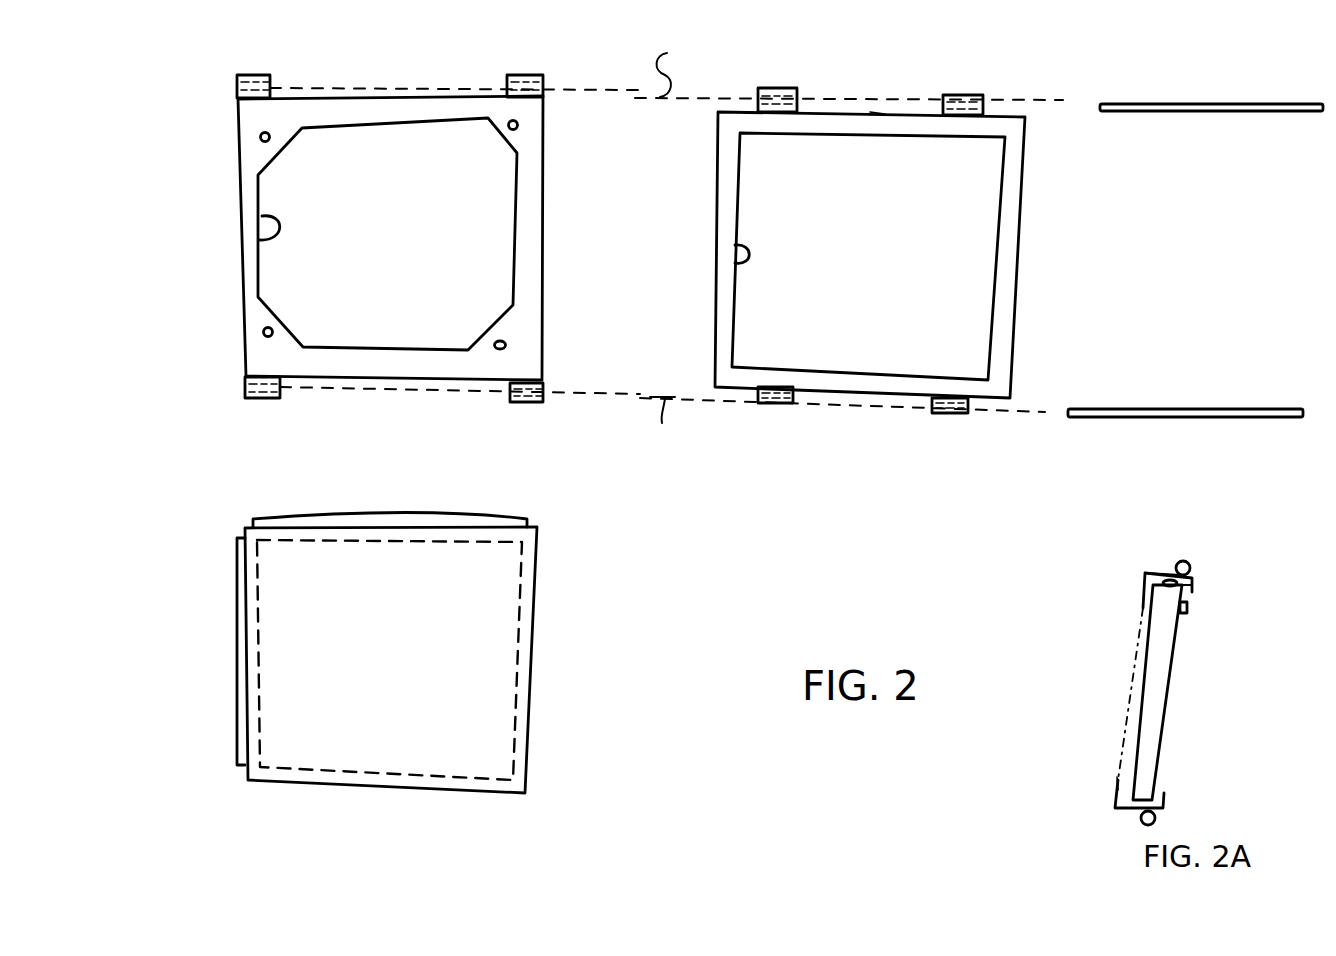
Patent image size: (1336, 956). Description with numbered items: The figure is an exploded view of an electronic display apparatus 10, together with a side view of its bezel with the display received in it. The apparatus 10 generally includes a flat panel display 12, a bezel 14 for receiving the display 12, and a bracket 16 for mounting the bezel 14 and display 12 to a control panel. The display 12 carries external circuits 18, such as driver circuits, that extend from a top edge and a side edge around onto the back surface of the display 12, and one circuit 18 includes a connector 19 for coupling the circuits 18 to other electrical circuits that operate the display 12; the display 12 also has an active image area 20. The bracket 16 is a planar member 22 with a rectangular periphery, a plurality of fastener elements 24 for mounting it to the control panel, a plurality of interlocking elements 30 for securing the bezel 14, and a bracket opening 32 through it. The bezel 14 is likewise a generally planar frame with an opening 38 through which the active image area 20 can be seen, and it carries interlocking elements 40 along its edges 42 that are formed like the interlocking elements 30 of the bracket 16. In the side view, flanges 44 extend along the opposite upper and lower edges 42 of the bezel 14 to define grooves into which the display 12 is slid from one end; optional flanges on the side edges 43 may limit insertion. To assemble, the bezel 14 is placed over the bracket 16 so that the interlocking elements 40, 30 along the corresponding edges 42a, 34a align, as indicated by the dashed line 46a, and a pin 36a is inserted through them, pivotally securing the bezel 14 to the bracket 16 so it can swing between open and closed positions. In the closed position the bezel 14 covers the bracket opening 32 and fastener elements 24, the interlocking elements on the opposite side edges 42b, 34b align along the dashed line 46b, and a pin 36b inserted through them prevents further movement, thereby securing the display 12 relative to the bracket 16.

In FIG. 2, the apparatus 10 is at (736, 531).
In FIG. 2, the flat panel display 12 is at (537, 664).
In FIG. 2A, the flat panel display 12 is at (1177, 643).
In FIG. 2, the bezel 14 is at (1022, 268).
In FIG. 2A, the bezel 14 is at (1129, 587).
In FIG. 2, the bracket 16 is at (547, 226).
In FIG. 2, the external circuits 18 is at (390, 512).
In FIG. 2A, the external circuits 18 is at (1197, 585).
In FIG. 2A, the connector 19 is at (1190, 608).
In FIG. 2, the active image area 20 is at (526, 604).
In FIG. 2A, the active image area 20 is at (1124, 696).
In FIG. 2, the planar member 22 is at (540, 173).
In FIG. 2, the fastener elements 24 is at (520, 125).
In FIG. 2, the interlocking elements 30 is at (248, 75).
In FIG. 2, the bracket opening 32 is at (276, 230).
In FIG. 2, the bracket edge 34a is at (389, 96).
In FIG. 2, the bracket side edge 34b is at (397, 382).
In FIG. 2, the pin 36a is at (1205, 113).
In FIG. 2, the pin 36b is at (1185, 420).
In FIG. 2, the opening 38 is at (741, 253).
In FIG. 2A, the opening 38 is at (1117, 777).
In FIG. 2, the interlocking elements 40 is at (778, 85).
In FIG. 2A, the interlocking elements 40 is at (1190, 562).
In FIG. 2A, the edges 42 is at (1157, 570).
In FIG. 2, the bezel edge 42a is at (877, 110).
In FIG. 2, the bezel side edge 42b is at (858, 390).
In FIG. 2, the side edges 43 is at (718, 197).
In FIG. 2A, the flanges 44 is at (1197, 580).
In FIG. 2, the dashed line 46a is at (849, 55).
In FIG. 2, the dashed line 46b is at (840, 432).